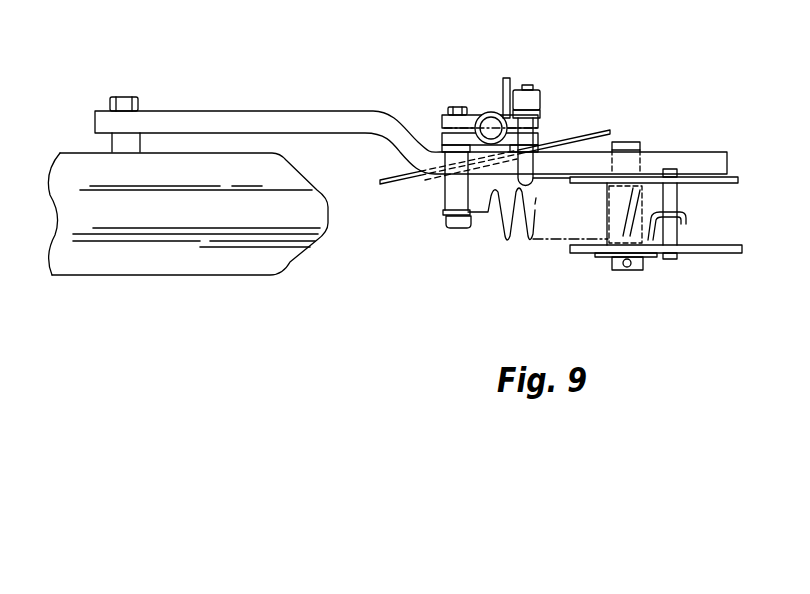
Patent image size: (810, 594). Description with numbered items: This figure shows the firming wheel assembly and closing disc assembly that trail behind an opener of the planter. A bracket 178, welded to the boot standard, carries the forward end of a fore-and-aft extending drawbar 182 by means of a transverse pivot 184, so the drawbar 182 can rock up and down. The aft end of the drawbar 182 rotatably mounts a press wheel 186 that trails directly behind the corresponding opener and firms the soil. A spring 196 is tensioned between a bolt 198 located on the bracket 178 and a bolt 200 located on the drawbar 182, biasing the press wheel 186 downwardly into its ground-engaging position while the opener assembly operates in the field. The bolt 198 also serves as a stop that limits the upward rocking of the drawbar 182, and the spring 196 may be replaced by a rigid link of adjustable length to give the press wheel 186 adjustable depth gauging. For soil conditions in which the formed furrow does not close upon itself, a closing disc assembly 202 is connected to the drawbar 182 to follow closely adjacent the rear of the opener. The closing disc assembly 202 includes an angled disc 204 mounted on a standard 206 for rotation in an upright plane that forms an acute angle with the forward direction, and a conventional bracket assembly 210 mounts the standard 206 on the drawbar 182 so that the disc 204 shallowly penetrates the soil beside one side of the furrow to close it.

The bracket 178 is at (708, 184).
The drawbar 182 is at (340, 111).
The transverse pivot 184 is at (636, 142).
The press wheel 186 is at (300, 254).
The spring 196 is at (508, 242).
The bolt 198 is at (669, 259).
The bolt 200 is at (455, 230).
The closing disc assembly 202 is at (480, 58).
The angled disc 204 is at (404, 184).
The standard 206 is at (489, 108).
The bracket assembly 210 is at (530, 87).